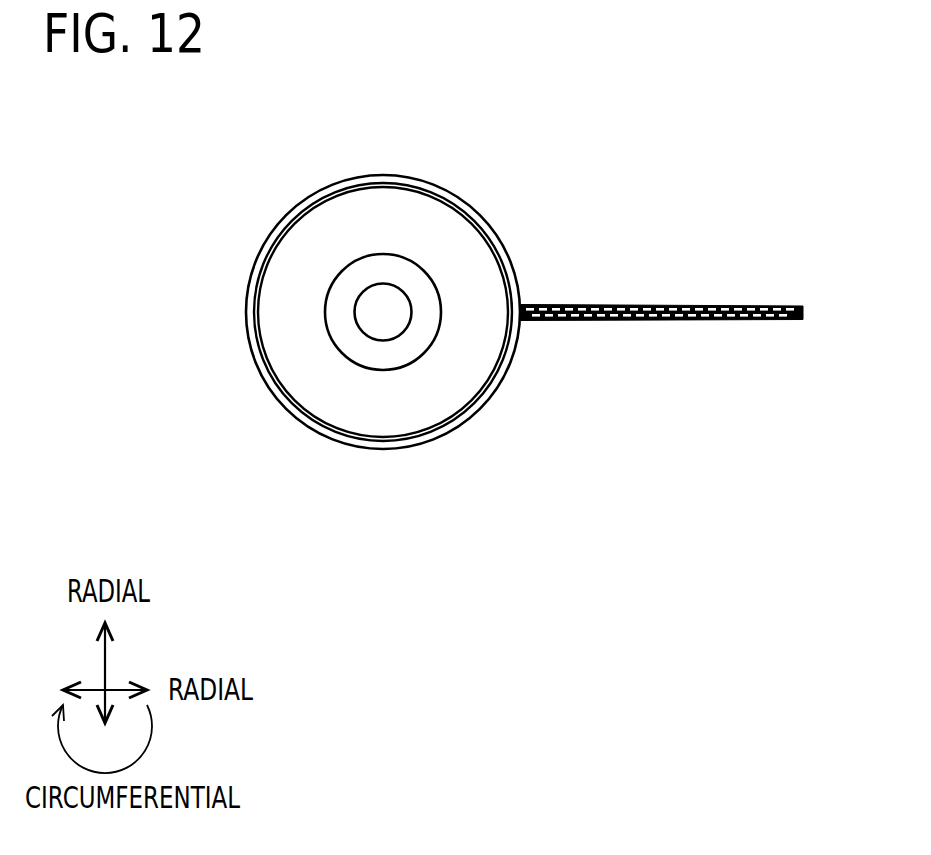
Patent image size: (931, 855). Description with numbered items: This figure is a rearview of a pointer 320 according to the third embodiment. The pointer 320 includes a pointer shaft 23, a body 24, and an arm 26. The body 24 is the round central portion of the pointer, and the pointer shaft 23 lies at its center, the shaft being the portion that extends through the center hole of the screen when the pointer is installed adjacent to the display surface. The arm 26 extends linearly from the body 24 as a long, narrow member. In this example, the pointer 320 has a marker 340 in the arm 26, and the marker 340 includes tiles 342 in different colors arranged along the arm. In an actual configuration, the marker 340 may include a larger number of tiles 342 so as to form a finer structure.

The pointer 320 is at (810, 131).
The body 24 is at (340, 183).
The pointer shaft 23 is at (432, 347).
The arm 26 is at (580, 304).
The tiles 342 is at (692, 321).
The marker 340 is at (638, 338).